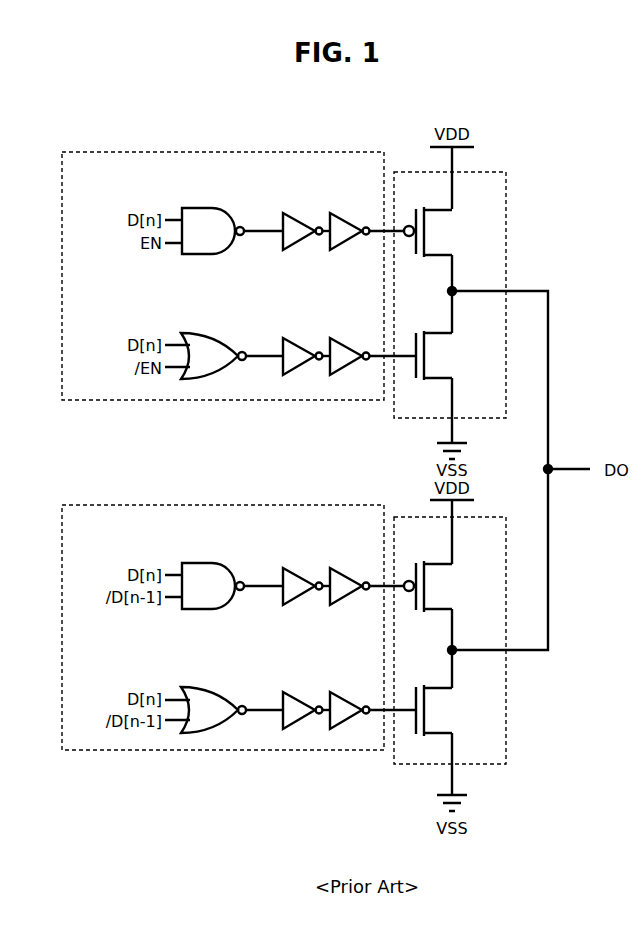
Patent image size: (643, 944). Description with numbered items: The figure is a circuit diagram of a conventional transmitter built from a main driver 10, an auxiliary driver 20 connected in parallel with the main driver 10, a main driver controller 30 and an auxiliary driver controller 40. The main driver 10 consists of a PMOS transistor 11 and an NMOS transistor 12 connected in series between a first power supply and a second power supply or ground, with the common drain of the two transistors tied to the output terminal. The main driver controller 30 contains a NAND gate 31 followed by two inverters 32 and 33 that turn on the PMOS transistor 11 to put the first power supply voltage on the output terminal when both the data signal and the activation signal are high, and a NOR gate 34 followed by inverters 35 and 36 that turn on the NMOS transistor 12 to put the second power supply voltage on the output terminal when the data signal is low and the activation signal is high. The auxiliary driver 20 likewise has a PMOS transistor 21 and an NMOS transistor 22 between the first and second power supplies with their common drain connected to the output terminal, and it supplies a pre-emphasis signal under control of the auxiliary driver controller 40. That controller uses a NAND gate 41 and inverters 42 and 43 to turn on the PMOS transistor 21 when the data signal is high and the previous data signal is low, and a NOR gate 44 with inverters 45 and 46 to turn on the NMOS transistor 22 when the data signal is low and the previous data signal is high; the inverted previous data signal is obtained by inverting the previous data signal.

The main driver 10 is at (506, 201).
The PMOS transistor 11 is at (440, 235).
The NMOS transistor 12 is at (446, 357).
The auxiliary driver 20 is at (506, 737).
The PMOS transistor 21 is at (440, 591).
The NMOS transistor 22 is at (446, 712).
The main driver controller 30 is at (257, 152).
The NAND gate 31 is at (199, 207).
The inverter 32 is at (292, 213).
The inverter 33 is at (339, 213).
The NOR gate 34 is at (199, 333).
The inverter 35 is at (292, 338).
The inverter 36 is at (339, 338).
The auxiliary driver controller 40 is at (284, 505).
The NAND gate 41 is at (199, 563).
The inverter 42 is at (292, 568).
The inverter 43 is at (339, 568).
The NOR gate 44 is at (199, 687).
The inverter 45 is at (292, 692).
The inverter 46 is at (339, 692).